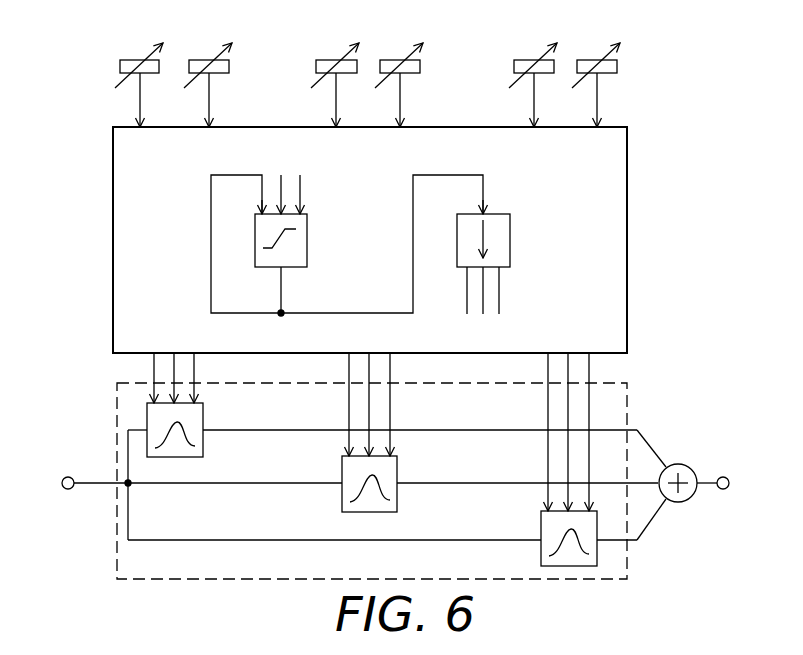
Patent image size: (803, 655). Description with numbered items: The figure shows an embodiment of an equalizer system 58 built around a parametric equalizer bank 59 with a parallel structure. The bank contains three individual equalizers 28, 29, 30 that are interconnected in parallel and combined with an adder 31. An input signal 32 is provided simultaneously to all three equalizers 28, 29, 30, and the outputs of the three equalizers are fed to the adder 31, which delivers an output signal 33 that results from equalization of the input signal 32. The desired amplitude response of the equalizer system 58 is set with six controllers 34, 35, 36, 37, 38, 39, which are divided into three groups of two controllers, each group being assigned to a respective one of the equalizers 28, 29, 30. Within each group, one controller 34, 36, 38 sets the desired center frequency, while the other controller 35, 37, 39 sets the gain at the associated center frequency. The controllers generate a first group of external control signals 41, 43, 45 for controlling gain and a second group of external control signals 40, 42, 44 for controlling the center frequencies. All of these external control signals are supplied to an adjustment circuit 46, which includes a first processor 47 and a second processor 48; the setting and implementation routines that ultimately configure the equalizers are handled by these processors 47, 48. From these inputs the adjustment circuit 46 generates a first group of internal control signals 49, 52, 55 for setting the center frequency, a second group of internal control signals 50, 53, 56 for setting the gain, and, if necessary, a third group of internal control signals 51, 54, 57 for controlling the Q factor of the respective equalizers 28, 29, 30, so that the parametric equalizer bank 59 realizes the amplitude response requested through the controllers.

The equalizer 28 is at (205, 446).
The equalizer 29 is at (400, 470).
The equalizer 30 is at (540, 524).
The adder 31 is at (672, 463).
The input signal 32 is at (65, 477).
The output signal 33 is at (723, 489).
The controller 34 is at (125, 60).
The controller 35 is at (193, 60).
The controller 36 is at (332, 60).
The controller 37 is at (395, 60).
The controller 38 is at (530, 60).
The controller 39 is at (592, 60).
The external control signal 40 is at (138, 108).
The external control signal 41 is at (207, 108).
The external control signal 42 is at (334, 108).
The external control signal 43 is at (398, 108).
The external control signal 44 is at (532, 108).
The external control signal 45 is at (595, 108).
The adjustment circuit 46 is at (629, 126).
The first processor 47 is at (307, 214).
The second processor 48 is at (510, 214).
The internal control signal 49 is at (154, 376).
The internal control signal 50 is at (174, 376).
The internal control signal 51 is at (194, 374).
The internal control signal 52 is at (349, 374).
The internal control signal 53 is at (369, 413).
The internal control signal 54 is at (390, 374).
The internal control signal 55 is at (548, 374).
The internal control signal 56 is at (568, 414).
The internal control signal 57 is at (589, 374).
The equalizer system 58 is at (655, 70).
The parametric equalizer bank 59 is at (629, 405).